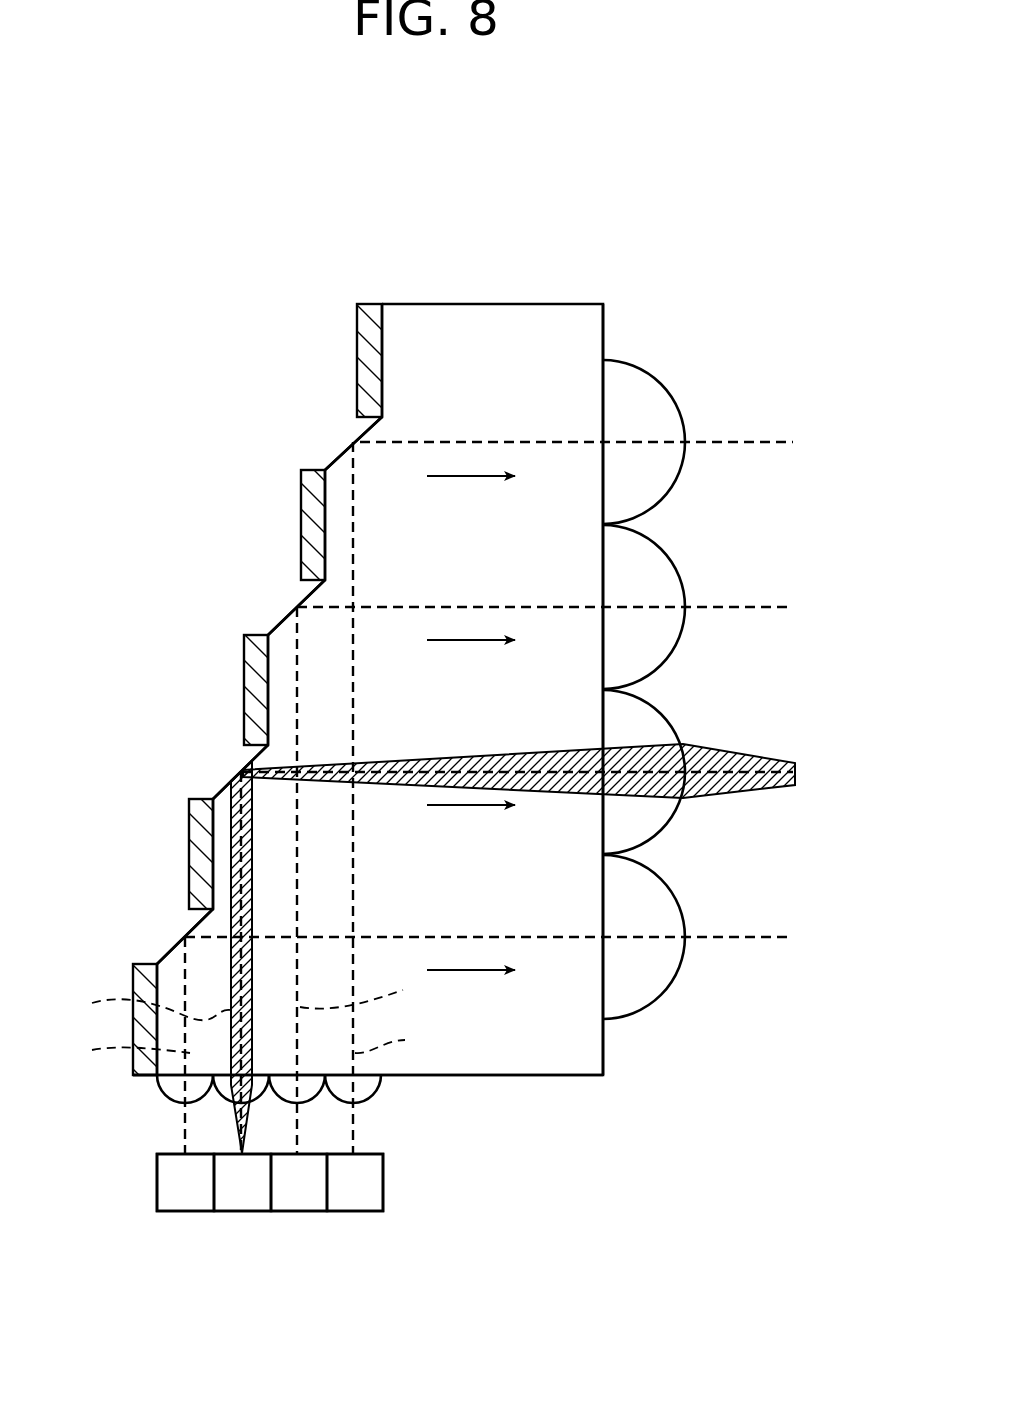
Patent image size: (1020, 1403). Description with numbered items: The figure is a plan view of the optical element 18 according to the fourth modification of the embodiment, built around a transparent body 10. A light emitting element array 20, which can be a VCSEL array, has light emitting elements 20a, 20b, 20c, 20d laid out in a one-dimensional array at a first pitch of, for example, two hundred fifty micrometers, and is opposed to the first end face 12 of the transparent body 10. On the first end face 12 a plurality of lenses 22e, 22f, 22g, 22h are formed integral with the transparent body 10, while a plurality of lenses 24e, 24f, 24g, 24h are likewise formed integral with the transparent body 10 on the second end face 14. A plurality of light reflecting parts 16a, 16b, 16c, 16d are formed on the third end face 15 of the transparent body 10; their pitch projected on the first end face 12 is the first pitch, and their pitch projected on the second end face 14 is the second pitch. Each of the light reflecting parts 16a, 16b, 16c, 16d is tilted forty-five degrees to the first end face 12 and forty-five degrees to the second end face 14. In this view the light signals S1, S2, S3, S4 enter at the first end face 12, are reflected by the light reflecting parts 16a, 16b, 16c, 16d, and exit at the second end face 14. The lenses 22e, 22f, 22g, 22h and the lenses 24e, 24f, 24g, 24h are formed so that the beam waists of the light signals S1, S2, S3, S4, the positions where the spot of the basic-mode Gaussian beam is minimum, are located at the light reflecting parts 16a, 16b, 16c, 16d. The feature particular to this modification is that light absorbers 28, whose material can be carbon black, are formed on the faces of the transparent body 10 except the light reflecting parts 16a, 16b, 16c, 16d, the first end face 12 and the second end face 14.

The transparent body 10 is at (350, 702).
The first end face 12 is at (547, 1077).
The second end face 14 is at (605, 332).
The third end face 15 is at (217, 686).
The light reflecting part 16a is at (190, 924).
The light reflecting part 16b is at (255, 762).
The light reflecting part 16c is at (300, 598).
The light reflecting part 16d is at (360, 426).
The optical element 18 is at (423, 727).
The light emitting element array 20 is at (330, 1229).
The light emitting element 20a is at (180, 1213).
The light emitting element 20b is at (240, 1213).
The light emitting element 20c is at (297, 1213).
The light emitting element 20d is at (355, 1213).
The lens 22e is at (178, 1103).
The lens 22f is at (232, 1100).
The lens 22g is at (312, 1100).
The lens 22h is at (377, 1093).
The lens 24e is at (670, 985).
The lens 24f is at (670, 820).
The lens 24g is at (670, 655).
The lens 24h is at (678, 490).
The light absorber 28 is at (368, 326).
The light signal S1 is at (126, 1050).
The light signal S2 is at (146, 1002).
The light signal S3 is at (370, 997).
The light signal S4 is at (398, 1044).